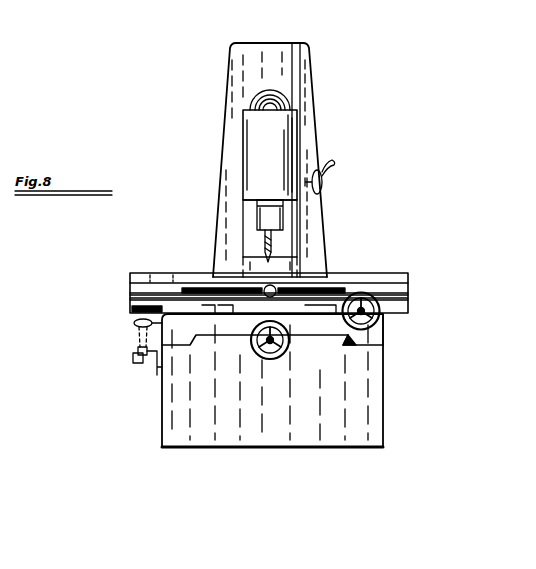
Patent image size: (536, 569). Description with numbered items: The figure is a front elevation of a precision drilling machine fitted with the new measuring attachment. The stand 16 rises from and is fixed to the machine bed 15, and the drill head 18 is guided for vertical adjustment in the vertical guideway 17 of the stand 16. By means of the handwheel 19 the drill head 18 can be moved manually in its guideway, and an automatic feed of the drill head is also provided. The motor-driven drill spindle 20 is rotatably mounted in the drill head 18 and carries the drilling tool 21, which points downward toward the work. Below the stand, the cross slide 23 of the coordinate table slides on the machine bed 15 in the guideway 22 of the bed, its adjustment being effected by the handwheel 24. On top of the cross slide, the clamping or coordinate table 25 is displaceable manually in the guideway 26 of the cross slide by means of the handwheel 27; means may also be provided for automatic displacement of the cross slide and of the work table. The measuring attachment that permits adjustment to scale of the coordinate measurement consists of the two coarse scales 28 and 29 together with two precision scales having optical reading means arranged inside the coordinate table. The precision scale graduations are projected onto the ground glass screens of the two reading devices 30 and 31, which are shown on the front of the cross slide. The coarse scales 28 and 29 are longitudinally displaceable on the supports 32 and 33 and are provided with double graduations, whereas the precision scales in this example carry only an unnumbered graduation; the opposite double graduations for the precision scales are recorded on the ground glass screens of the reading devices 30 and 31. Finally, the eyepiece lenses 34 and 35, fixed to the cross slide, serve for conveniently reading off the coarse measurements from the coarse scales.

The machine bed 15 is at (295, 427).
The stand 16 is at (316, 58).
The vertical guideway 17 is at (297, 100).
The drill head 18 is at (298, 158).
The handwheel 19 is at (322, 192).
The motor-driven drill spindle 20 is at (283, 228).
The drilling tool 21 is at (273, 252).
The guideway 22 is at (356, 346).
The cross slide 23 is at (384, 334).
The handwheel 24 is at (270, 360).
The clamping or coordinate table 25 is at (130, 278).
The guideway 26 is at (133, 305).
The handwheel 27 is at (367, 297).
The coarse scale 28 is at (135, 360).
The coarse scale 29 is at (176, 290).
The reading device 30 is at (220, 313).
The reading device 31 is at (326, 330).
The support 32 is at (156, 372).
The support 33 is at (150, 297).
The eyepiece lens 34 is at (135, 328).
The eyepiece lens 35 is at (262, 290).